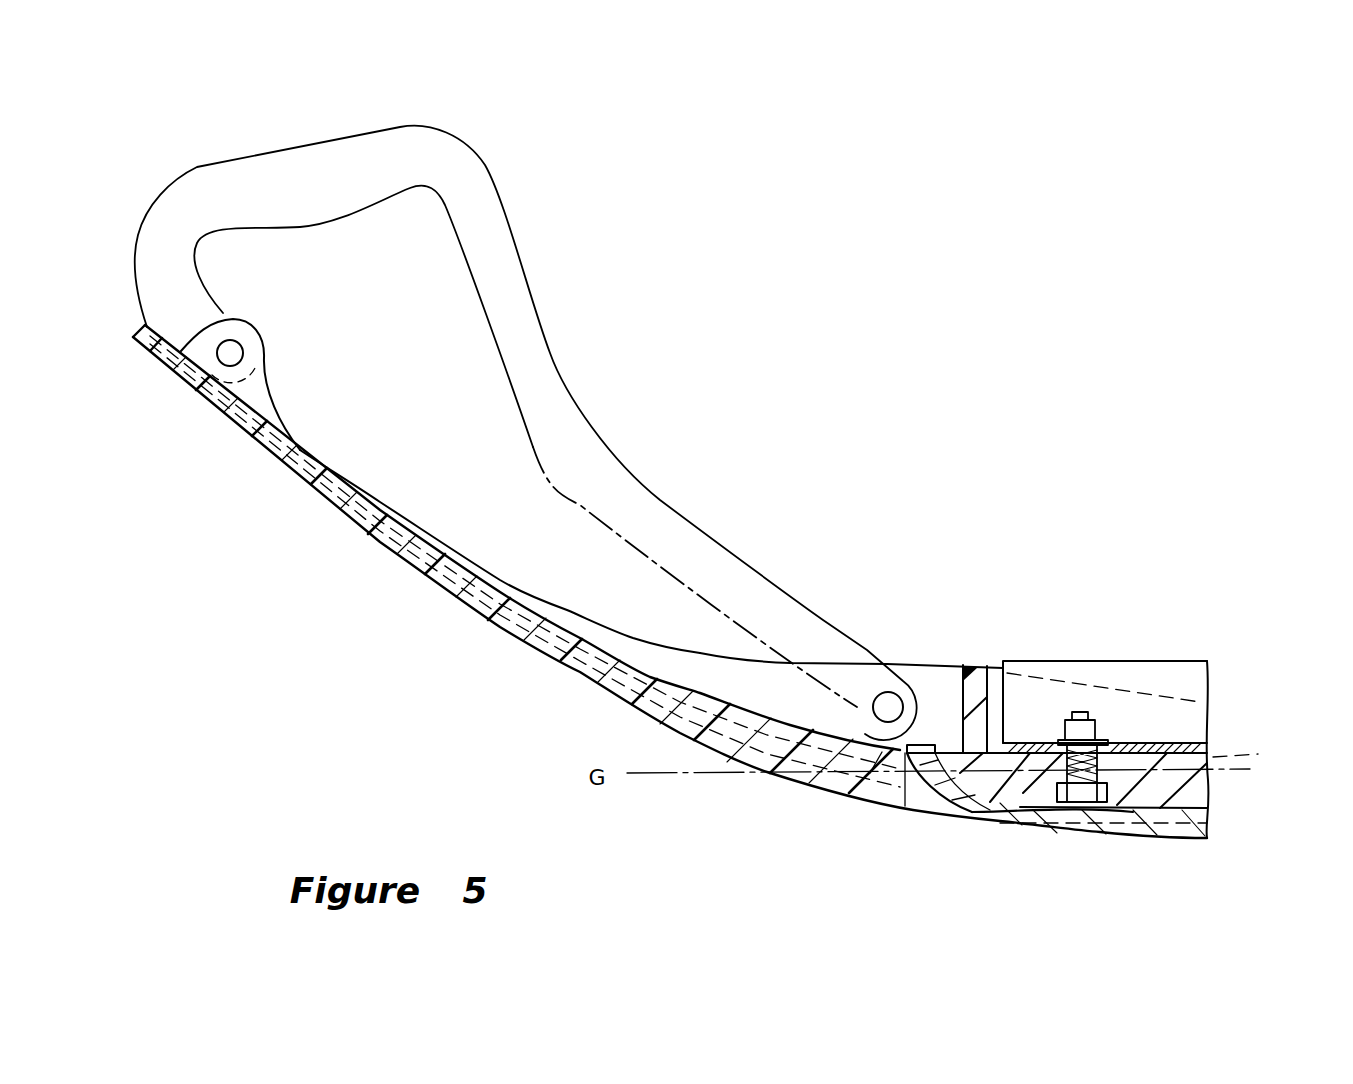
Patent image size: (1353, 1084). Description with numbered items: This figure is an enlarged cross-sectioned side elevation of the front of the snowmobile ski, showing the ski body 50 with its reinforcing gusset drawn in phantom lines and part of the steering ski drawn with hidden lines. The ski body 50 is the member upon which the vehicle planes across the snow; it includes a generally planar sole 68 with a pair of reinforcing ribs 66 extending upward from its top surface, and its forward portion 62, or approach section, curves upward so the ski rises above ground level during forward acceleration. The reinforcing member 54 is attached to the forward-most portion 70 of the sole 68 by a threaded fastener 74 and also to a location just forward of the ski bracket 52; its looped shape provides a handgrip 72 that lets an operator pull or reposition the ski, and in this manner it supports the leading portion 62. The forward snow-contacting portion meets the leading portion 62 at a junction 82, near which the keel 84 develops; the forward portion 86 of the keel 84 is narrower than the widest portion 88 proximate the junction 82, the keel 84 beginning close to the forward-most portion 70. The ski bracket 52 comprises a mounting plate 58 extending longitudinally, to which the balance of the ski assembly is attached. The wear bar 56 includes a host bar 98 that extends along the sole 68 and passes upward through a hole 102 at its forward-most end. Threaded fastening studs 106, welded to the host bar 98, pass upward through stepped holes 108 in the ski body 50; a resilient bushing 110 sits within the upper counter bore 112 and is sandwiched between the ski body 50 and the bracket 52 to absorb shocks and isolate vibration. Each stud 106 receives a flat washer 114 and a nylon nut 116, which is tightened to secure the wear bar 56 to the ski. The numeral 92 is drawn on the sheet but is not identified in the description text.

The ski body 50 is at (748, 690).
The ski bracket 52 is at (1183, 660).
The reinforcing member 54 is at (655, 490).
The wear bar 56 is at (1184, 828).
The mounting plate 58 is at (1207, 742).
The forward portion 62 is at (565, 628).
The reinforcing ribs 66 is at (937, 683).
The sole 68 is at (1258, 754).
The forward-most portion 70 is at (248, 437).
The handgrip 72 is at (286, 188).
The threaded fastener 74 is at (240, 345).
The junction 82 is at (877, 790).
The keel 84 is at (790, 782).
The forward portion of the keel 86 is at (348, 520).
The widest portion of the keel 88 is at (847, 797).
The bracket body 92 is at (1200, 795).
The host bar 98 is at (1032, 812).
The hole 102 is at (917, 793).
The threaded fastening stud 106 is at (1083, 711).
The hole 108 is at (1093, 802).
The resilient bushing 110 is at (1032, 748).
The upper counter bore 112 is at (1138, 812).
The flat washer 114 is at (1113, 742).
The nut 116 is at (1118, 752).